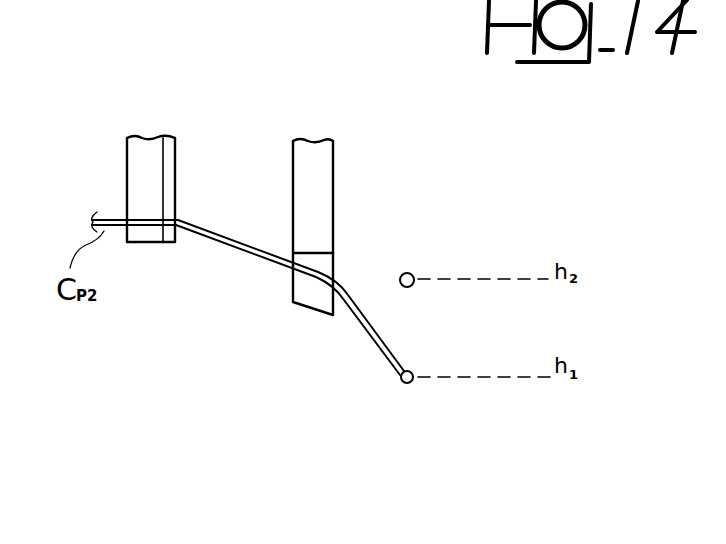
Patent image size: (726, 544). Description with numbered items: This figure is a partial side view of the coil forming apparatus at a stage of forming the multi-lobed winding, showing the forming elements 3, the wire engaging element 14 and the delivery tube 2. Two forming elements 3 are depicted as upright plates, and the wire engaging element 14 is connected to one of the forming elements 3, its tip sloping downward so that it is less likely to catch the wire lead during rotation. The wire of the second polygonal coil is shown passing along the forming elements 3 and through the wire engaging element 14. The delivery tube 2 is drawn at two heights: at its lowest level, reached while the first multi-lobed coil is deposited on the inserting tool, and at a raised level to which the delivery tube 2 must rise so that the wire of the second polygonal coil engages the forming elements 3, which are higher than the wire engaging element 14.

The delivery tube 2 is at (403, 275).
The forming element 3 is at (161, 172).
The wire engaging element 14 is at (307, 307).